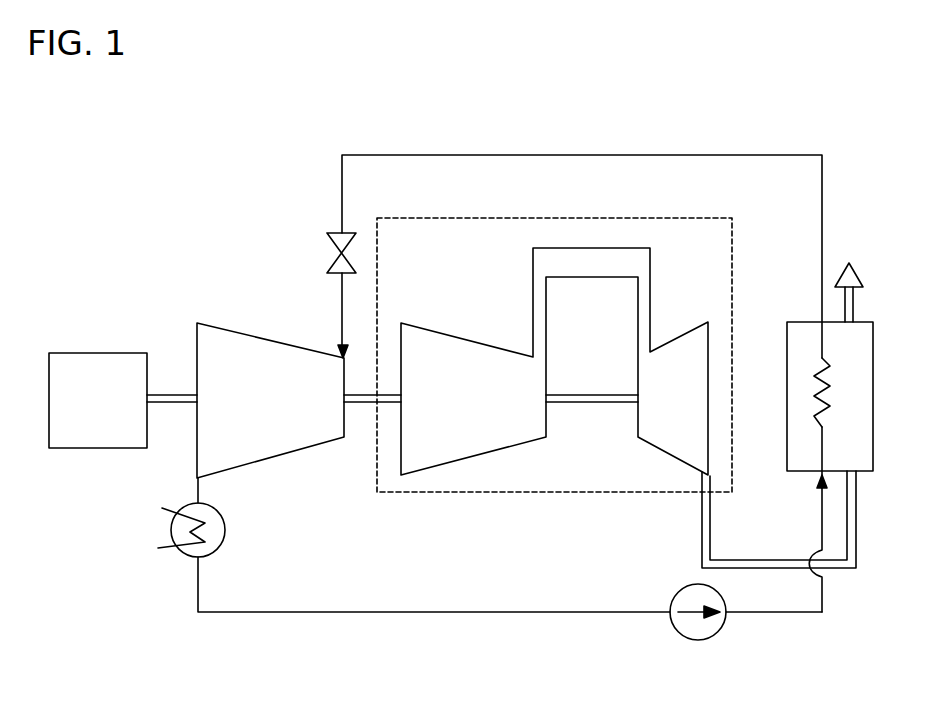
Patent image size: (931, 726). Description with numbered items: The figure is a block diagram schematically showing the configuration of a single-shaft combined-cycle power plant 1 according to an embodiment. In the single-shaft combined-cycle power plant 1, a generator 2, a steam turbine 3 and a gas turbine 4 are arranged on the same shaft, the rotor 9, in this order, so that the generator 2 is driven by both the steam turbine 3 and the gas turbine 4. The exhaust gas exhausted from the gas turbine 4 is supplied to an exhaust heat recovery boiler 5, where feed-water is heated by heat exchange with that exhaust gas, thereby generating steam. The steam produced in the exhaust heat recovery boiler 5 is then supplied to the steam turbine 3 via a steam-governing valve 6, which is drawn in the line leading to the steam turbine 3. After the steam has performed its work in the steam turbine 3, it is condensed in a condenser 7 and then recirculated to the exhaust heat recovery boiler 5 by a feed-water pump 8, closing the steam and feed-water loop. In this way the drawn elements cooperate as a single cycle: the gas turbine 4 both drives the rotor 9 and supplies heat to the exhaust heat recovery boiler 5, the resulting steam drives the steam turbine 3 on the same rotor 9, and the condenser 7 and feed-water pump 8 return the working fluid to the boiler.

The single-shaft combined-cycle power plant 1 is at (822, 78).
The generator 2 is at (100, 353).
The steam turbine 3 is at (226, 325).
The gas turbine 4 is at (460, 218).
The exhaust heat recovery boiler 5 is at (862, 322).
The steam-governing valve 6 is at (330, 245).
The condenser 7 is at (185, 556).
The feed-water pump 8 is at (693, 640).
The rotor 9 is at (352, 405).